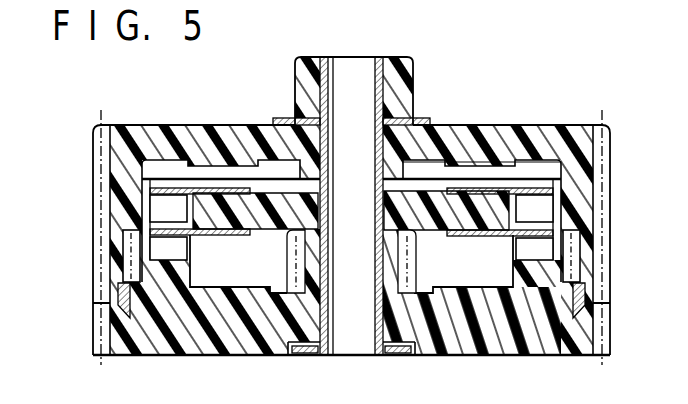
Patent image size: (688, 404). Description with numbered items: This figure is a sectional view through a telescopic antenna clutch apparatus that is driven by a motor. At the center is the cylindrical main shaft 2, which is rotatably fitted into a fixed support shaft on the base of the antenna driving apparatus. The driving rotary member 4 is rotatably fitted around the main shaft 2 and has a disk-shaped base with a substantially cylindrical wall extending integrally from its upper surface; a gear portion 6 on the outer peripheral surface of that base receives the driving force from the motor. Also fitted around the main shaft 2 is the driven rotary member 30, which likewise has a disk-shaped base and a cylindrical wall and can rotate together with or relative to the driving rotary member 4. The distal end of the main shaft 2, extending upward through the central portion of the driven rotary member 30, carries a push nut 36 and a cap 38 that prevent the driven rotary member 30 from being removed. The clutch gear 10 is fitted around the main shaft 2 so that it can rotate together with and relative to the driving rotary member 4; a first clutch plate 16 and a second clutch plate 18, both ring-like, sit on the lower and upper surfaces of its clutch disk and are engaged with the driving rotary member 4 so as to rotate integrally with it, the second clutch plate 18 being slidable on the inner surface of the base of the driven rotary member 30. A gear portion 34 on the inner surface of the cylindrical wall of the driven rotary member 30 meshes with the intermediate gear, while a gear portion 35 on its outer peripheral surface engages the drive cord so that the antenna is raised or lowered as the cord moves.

The main shaft 2 is at (375, 72).
The driving rotary member 4 is at (451, 356).
The gear portion 6 is at (97, 329).
The clutch gear 10 is at (390, 176).
The first clutch plate 16 is at (150, 218).
The second clutch plate 18 is at (500, 190).
The driven rotary member 30 is at (146, 125).
The gear portion 34 is at (127, 256).
The gear portion 35 is at (97, 153).
The push nut 36 is at (423, 122).
The cap 38 is at (413, 65).